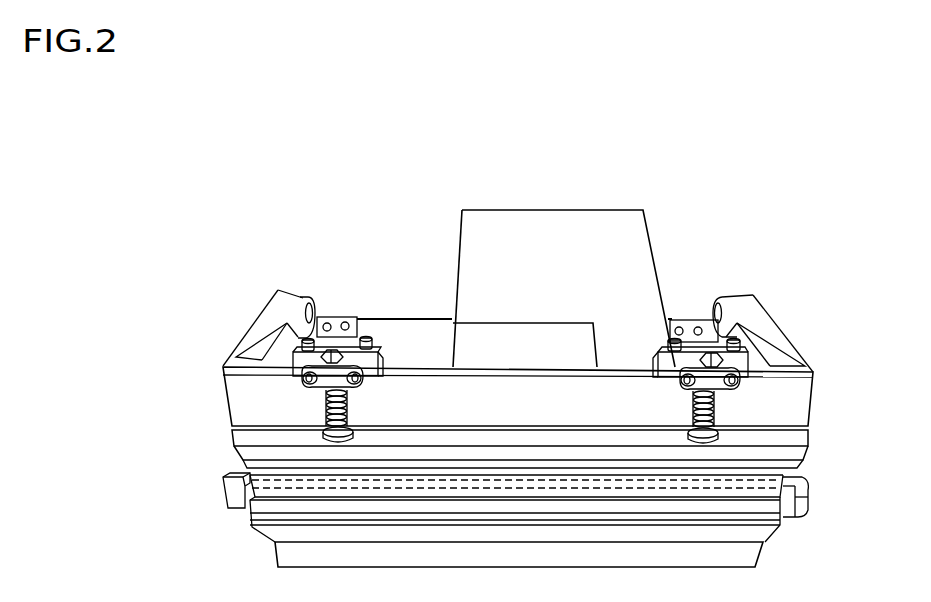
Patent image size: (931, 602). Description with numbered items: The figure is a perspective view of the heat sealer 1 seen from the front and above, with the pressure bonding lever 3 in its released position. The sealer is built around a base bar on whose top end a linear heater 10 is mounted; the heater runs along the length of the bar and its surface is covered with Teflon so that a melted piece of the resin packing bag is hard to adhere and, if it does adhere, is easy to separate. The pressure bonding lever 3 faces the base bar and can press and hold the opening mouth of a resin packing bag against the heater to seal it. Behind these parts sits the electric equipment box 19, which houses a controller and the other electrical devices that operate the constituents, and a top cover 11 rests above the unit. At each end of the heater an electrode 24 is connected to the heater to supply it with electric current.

The heat sealer 1 is at (745, 272).
The pressure bonding lever 3 is at (800, 402).
The linear heater 10 is at (765, 482).
The top cover 11 is at (607, 227).
The electric equipment box 19 is at (402, 317).
The electrode 24 is at (228, 497).